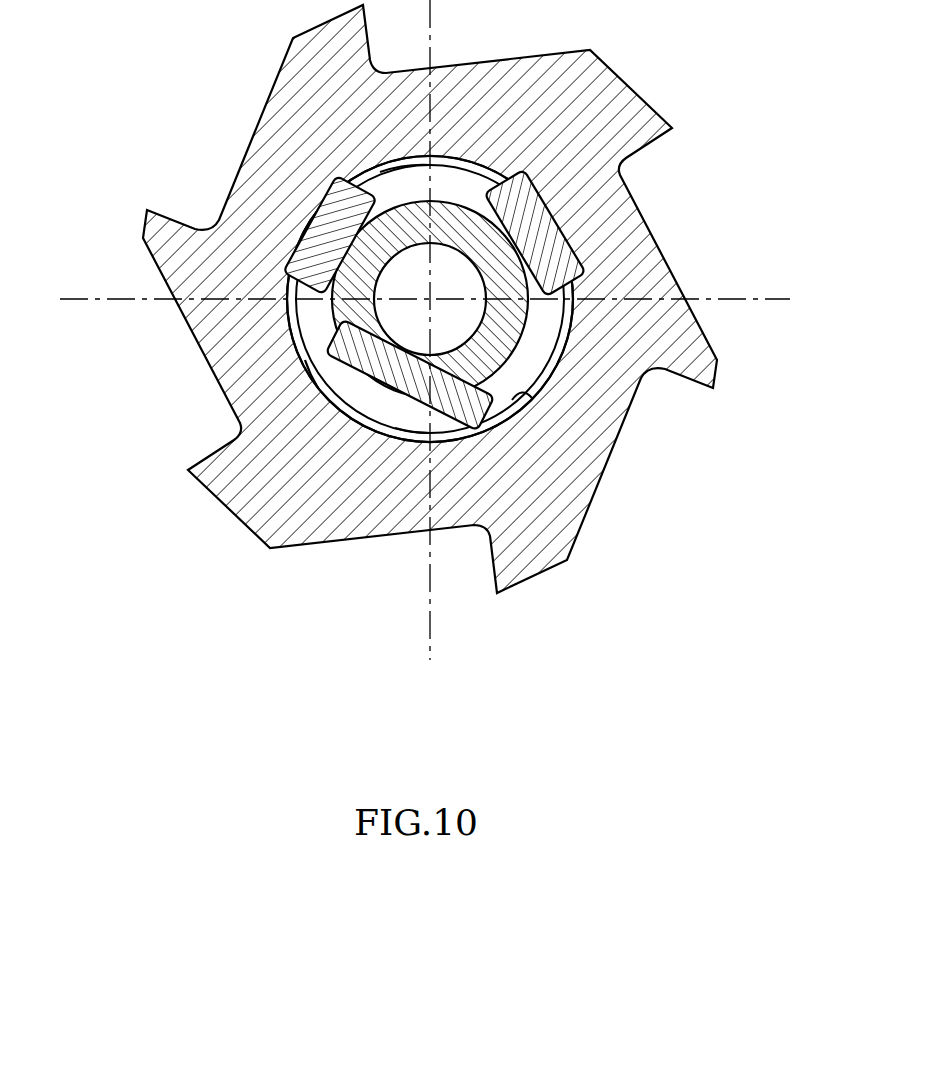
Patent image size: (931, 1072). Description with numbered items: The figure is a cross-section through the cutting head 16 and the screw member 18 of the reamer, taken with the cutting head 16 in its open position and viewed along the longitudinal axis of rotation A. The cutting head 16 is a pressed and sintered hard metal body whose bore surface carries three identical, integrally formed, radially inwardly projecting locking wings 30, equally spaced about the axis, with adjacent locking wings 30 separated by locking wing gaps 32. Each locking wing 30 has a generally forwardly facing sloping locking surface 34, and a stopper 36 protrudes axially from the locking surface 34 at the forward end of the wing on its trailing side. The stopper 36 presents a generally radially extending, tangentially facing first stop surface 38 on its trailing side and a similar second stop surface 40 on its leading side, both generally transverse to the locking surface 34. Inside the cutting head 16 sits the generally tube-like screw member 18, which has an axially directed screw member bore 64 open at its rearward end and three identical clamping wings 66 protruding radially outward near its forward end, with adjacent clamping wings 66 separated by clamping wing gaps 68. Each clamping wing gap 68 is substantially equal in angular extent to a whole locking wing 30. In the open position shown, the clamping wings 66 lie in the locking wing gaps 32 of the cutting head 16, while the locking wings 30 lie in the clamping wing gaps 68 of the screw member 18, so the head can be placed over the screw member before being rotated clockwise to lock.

The cutting head 16 is at (630, 72).
The screw member 18 is at (572, 240).
The locking wing 30 is at (330, 393).
The locking wing gap 32 is at (323, 203).
The locking surface 34 is at (585, 340).
The stopper 36 is at (545, 400).
The first stop surface 38 is at (478, 408).
The second stop surface 40 is at (522, 397).
The screw member bore 64 is at (318, 388).
The clamping wing 66 is at (405, 442).
The clamping wing gap 68 is at (397, 193).
The longitudinal axis of rotation A is at (430, 299).